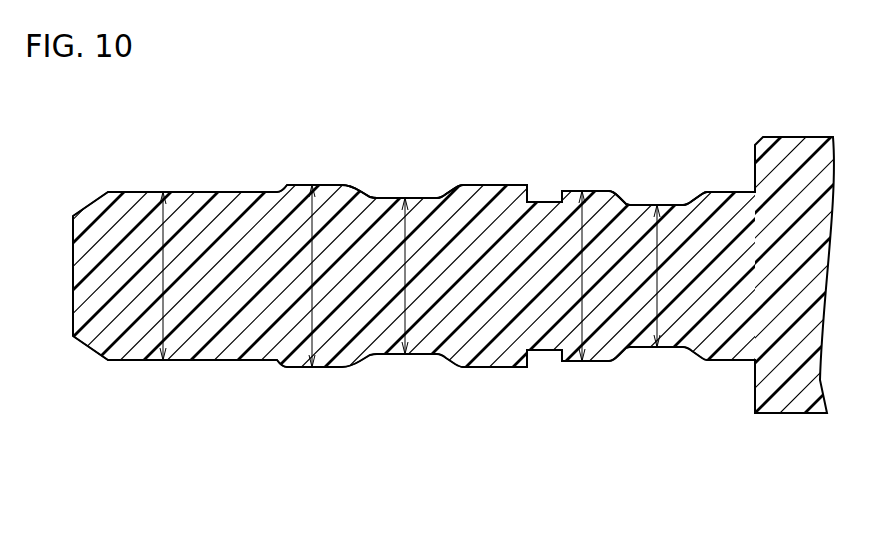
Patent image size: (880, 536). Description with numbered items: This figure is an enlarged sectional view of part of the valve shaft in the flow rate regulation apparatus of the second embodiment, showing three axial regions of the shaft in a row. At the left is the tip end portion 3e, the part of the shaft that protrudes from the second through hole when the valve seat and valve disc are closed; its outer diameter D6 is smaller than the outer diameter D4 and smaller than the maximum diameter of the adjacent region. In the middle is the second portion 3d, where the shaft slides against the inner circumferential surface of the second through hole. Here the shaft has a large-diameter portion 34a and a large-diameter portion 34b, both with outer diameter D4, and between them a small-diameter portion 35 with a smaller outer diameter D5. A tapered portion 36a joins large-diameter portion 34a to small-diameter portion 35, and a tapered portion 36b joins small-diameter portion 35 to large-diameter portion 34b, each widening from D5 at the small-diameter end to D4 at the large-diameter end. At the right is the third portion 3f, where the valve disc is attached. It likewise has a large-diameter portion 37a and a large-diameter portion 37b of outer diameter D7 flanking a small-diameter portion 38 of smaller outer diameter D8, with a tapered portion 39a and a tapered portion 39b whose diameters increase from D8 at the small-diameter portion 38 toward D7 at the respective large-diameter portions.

The second portion 3d is at (530, 440).
The tip end portion 3e is at (289, 440).
The third portion 3f is at (750, 440).
The large-diameter portion 34a is at (332, 185).
The large-diameter portion 34b is at (500, 185).
The small-diameter portion 35 is at (398, 198).
The tapered portion 36a is at (365, 189).
The tapered portion 36b is at (452, 192).
The large-diameter portion 37a is at (595, 191).
The large-diameter portion 37b is at (738, 192).
The small-diameter portion 38 is at (657, 205).
The tapered portion 39a is at (625, 196).
The tapered portion 39b is at (703, 196).
The outer diameter D4 is at (307, 274).
The outer diameter D5 is at (412, 277).
The outer diameter D6 is at (166, 272).
The outer diameter D7 is at (575, 277).
The outer diameter D8 is at (664, 277).